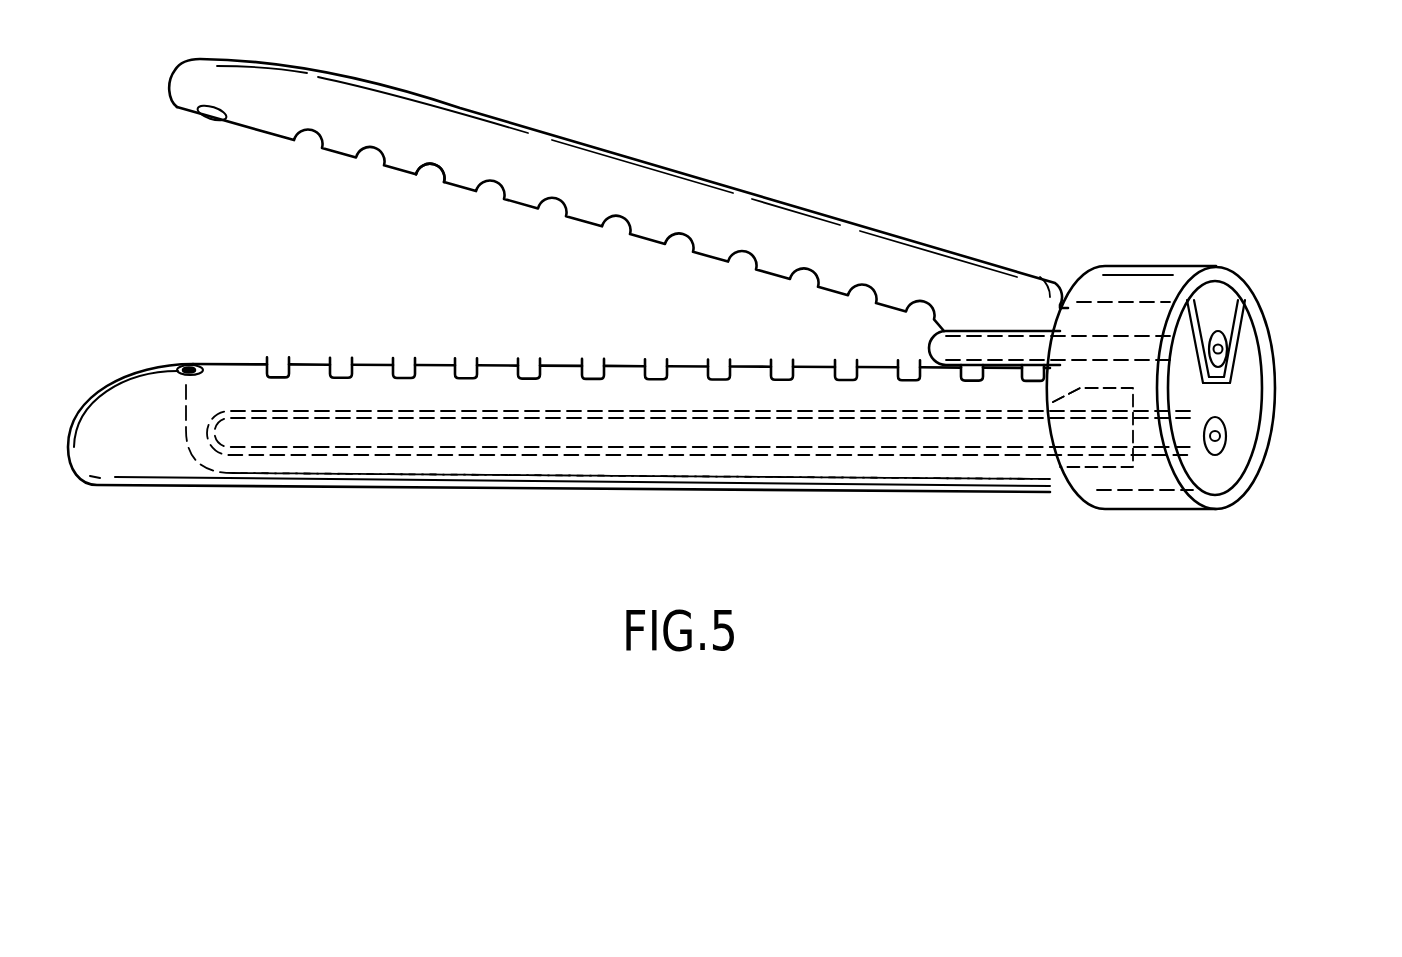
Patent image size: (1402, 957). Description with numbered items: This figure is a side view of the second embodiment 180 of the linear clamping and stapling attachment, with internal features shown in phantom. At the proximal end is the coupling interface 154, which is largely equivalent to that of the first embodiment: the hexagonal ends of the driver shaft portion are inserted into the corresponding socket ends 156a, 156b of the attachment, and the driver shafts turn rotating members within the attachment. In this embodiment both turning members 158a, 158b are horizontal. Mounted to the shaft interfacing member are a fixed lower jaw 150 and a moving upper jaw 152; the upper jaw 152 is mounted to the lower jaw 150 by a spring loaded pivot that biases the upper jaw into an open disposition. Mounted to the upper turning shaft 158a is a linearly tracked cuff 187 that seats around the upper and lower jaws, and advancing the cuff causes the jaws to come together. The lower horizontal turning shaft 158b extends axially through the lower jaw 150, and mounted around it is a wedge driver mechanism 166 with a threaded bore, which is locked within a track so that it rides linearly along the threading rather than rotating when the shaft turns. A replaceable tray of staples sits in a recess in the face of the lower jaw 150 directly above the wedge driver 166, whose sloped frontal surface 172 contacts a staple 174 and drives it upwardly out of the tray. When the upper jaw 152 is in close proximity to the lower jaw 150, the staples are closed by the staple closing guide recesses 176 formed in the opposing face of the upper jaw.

The lower jaw 150 is at (142, 463).
The upper jaw 152 is at (250, 80).
The coupling interface 154 is at (1247, 394).
The socket end 156a is at (1222, 350).
The socket end 156b is at (1227, 437).
The upper turning shaft 158a is at (997, 340).
The lower horizontal turning shaft 158b is at (888, 456).
The wedge driver mechanism 166 is at (1097, 452).
The sloped frontal surface 172 is at (1078, 390).
The staple 174 is at (278, 366).
The staple closing guide recesses 176 is at (430, 180).
The second embodiment 180 is at (932, 133).
The linearly tracked cuff 187 is at (1145, 270).